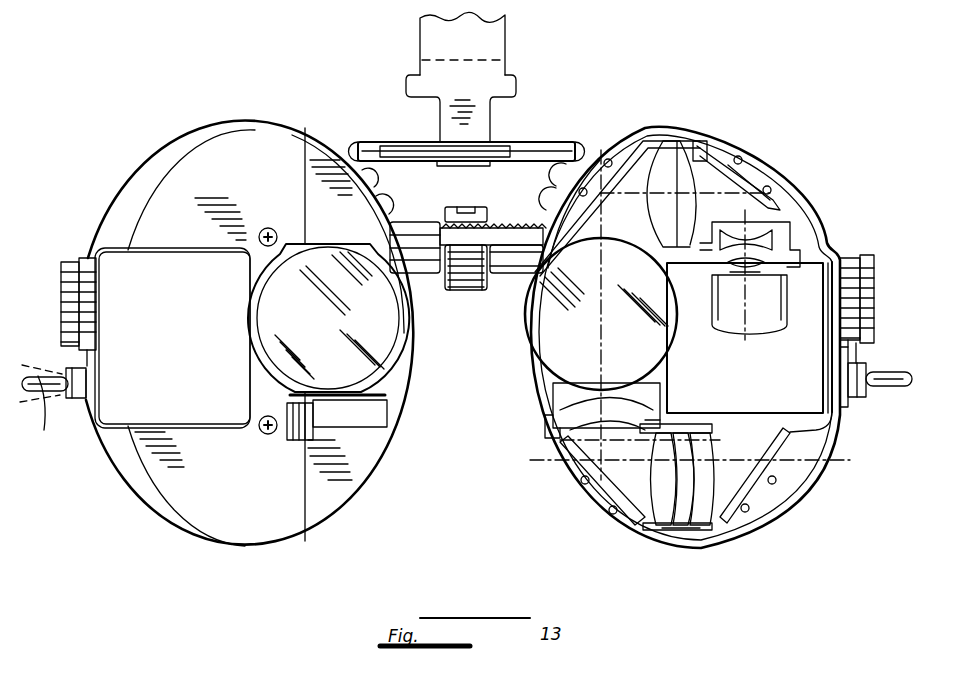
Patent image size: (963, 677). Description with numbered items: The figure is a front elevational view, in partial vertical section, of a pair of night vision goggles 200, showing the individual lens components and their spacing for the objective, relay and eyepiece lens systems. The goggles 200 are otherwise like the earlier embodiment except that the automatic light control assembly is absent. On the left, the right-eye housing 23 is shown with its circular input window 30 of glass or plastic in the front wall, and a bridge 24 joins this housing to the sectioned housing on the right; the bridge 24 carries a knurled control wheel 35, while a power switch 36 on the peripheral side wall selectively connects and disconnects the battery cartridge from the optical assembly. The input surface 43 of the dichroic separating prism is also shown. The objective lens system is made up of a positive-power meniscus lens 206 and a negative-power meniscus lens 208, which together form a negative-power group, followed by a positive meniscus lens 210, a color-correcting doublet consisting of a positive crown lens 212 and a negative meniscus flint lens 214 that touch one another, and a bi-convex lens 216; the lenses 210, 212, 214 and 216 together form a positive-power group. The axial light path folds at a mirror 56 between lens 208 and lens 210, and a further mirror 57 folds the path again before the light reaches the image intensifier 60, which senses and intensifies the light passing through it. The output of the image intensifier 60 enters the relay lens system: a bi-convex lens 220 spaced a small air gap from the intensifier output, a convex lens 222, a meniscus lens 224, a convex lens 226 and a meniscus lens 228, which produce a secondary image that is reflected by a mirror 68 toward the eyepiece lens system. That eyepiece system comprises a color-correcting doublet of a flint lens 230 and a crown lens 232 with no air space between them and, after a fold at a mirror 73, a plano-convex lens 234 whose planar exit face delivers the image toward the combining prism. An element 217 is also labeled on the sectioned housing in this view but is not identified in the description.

The housing 23 is at (184, 137).
The bridge 24 is at (425, 214).
The input window 30 is at (306, 308).
The knurled control wheel 35 is at (470, 290).
The power switch 36 is at (53, 412).
The input surface 43 is at (596, 292).
The mirror 56 is at (563, 462).
The mirror 57 is at (770, 500).
The image intensifier 60 is at (794, 356).
The mirror 68 is at (740, 168).
The mirror 73 is at (628, 165).
The pair of goggles 200 is at (480, 388).
The positive-power meniscus lens 206 is at (577, 410).
The negative-power meniscus lens 208 is at (563, 428).
The positive meniscus lens 210 is at (658, 500).
The positive crown lens 212 is at (672, 500).
The negative meniscus flint lens 214 is at (692, 500).
The bi-convex lens 216 is at (718, 518).
The housing 217 is at (802, 470).
The bi-convex lens 220 is at (773, 323).
The convex lens 222 is at (790, 263).
The meniscus lens 224 is at (770, 262).
The convex lens 226 is at (766, 246).
The meniscus lens 228 is at (770, 222).
The flint lens 230 is at (692, 185).
The crown lens 232 is at (668, 165).
The plano-convex lens 234 is at (590, 162).